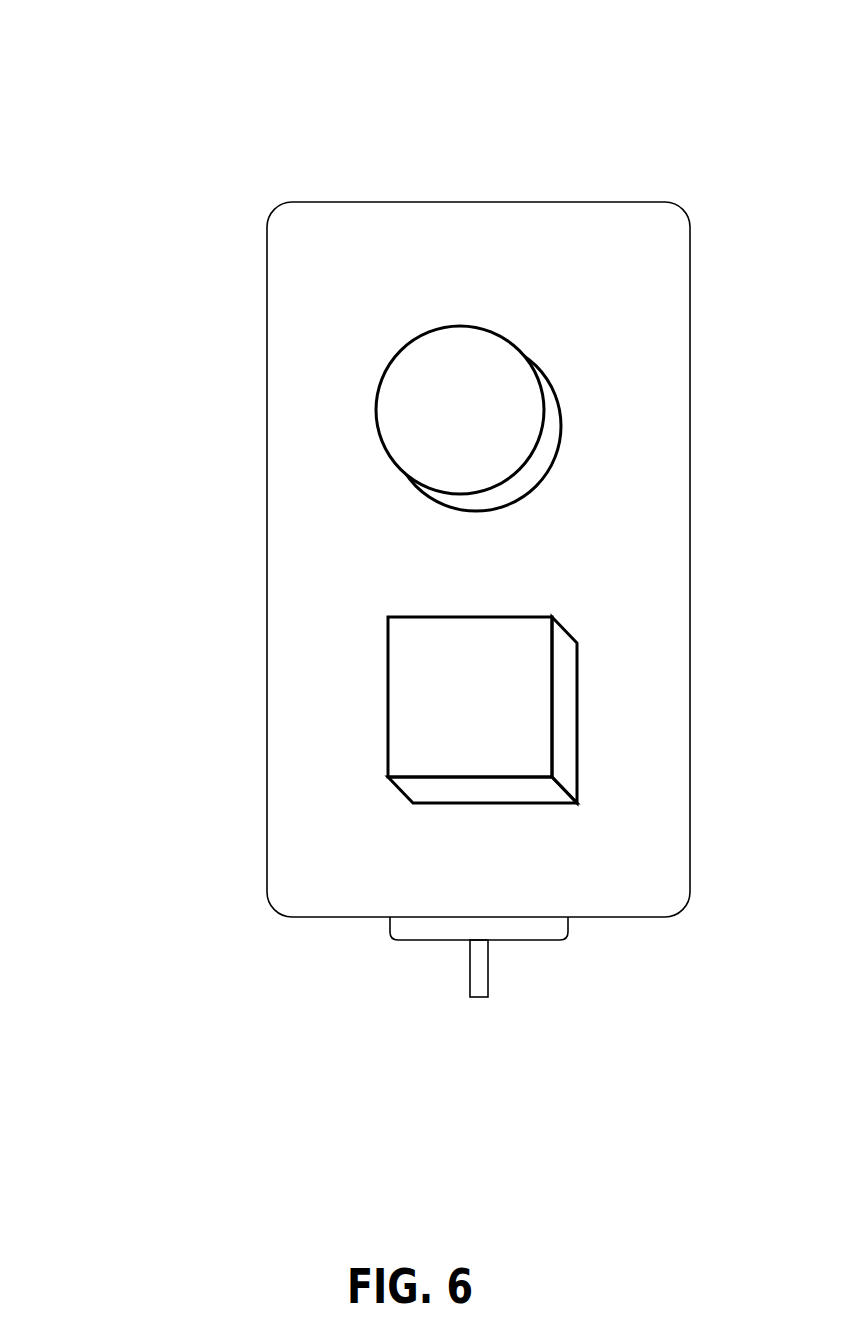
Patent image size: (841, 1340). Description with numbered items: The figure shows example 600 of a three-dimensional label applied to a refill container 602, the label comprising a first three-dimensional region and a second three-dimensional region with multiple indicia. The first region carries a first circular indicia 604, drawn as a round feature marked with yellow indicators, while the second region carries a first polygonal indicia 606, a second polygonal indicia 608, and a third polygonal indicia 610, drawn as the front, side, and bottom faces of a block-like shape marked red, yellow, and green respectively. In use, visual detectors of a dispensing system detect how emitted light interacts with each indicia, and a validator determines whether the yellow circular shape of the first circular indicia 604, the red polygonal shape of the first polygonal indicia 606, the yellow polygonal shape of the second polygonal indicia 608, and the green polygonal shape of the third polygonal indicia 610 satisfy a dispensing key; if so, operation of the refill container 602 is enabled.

The example 600 is at (136, 58).
The refill container 602 is at (648, 202).
The first circular indicia 604 is at (470, 338).
The first polygonal indicia 606 is at (490, 616).
The second polygonal indicia 608 is at (576, 680).
The third polygonal indicia 610 is at (427, 812).